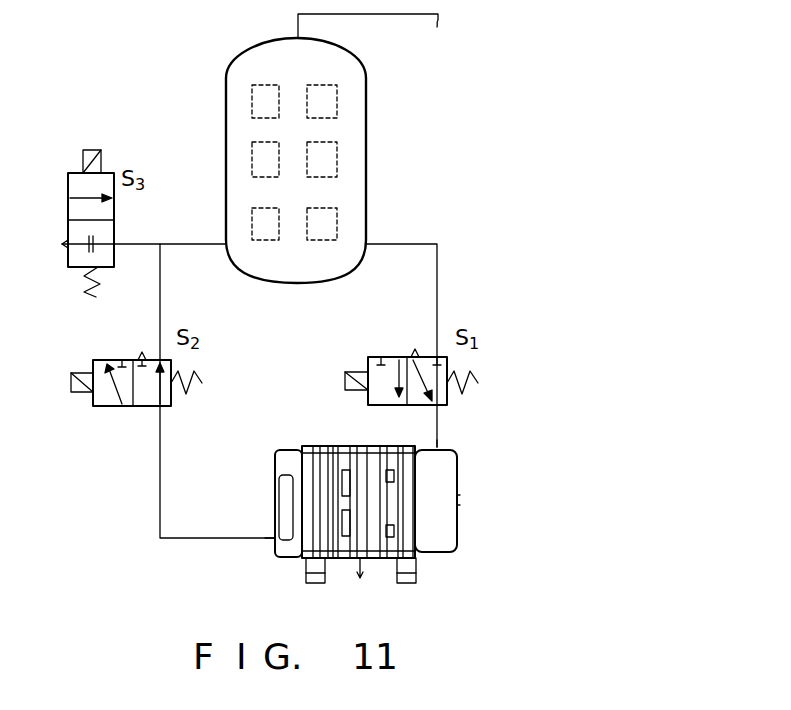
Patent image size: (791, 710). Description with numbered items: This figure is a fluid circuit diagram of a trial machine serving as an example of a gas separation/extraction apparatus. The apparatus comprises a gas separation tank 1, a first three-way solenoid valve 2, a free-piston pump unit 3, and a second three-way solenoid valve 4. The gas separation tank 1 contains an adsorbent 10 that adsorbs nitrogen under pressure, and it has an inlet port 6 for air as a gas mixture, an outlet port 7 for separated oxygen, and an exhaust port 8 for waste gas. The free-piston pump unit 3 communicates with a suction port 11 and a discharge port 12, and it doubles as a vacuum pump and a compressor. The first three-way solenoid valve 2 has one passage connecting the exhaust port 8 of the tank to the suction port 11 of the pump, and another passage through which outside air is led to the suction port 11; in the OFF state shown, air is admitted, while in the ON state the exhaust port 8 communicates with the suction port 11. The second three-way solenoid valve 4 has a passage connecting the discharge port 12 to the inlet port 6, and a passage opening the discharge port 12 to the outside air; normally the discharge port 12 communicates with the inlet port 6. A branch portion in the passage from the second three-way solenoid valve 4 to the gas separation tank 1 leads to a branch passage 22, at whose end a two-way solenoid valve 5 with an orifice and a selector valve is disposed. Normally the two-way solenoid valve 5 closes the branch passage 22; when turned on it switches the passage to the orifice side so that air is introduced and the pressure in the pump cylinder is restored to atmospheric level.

The gas separation tank 1 is at (360, 125).
The adsorbent 10 is at (252, 85).
The outlet port 7 is at (300, 40).
The inlet port 6 is at (226, 244).
The branch passage 22 is at (145, 244).
The exhaust port 8 is at (366, 244).
The two-way solenoid valve 5 is at (68, 173).
The second three-way solenoid valve 4 is at (122, 360).
The first three-way solenoid valve 2 is at (394, 357).
The free-piston pump unit 3 is at (445, 531).
The suction port 11 is at (438, 449).
The discharge port 12 is at (275, 538).